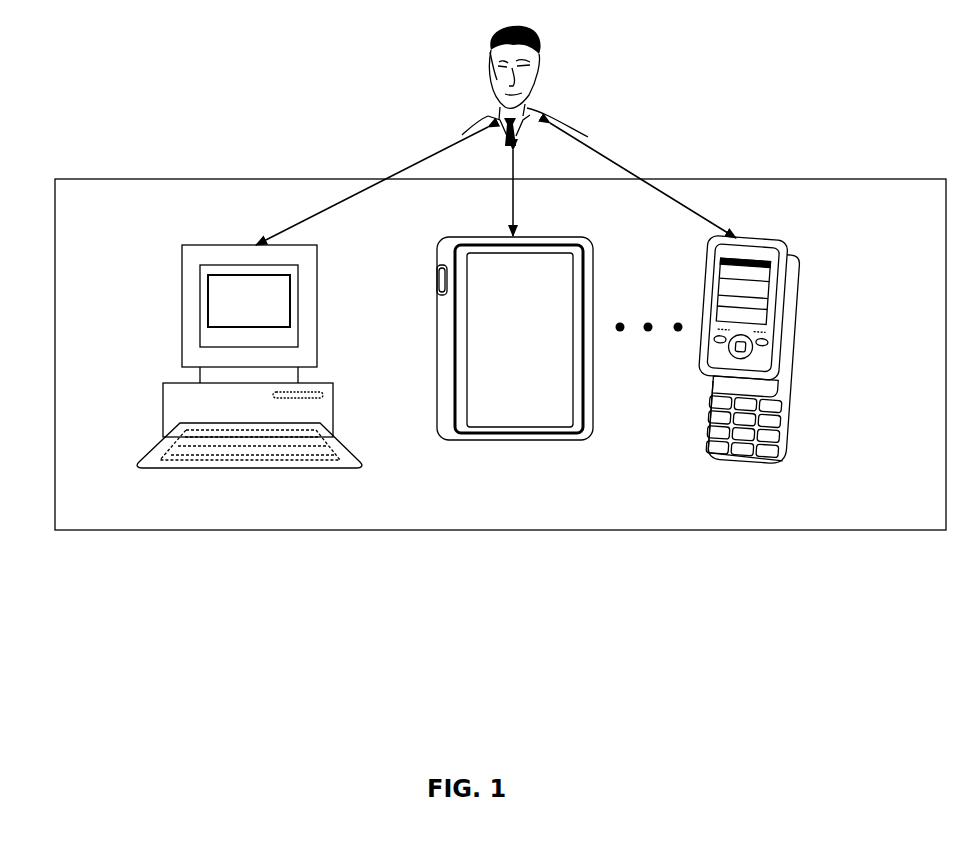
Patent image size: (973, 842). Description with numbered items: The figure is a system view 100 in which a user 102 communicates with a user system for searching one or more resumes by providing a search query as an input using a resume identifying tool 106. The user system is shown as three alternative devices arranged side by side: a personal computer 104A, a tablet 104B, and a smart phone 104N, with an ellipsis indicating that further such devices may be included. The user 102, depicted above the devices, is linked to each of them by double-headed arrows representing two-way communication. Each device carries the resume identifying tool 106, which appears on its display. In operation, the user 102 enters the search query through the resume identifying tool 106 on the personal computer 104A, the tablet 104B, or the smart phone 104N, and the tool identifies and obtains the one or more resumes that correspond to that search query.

The system view 100 is at (726, 716).
The user 102 is at (490, 122).
The personal computer 104A is at (175, 413).
The tablet 104B is at (437, 300).
The smart phone 104N is at (798, 367).
The resume identifying tool 106 is at (213, 292).